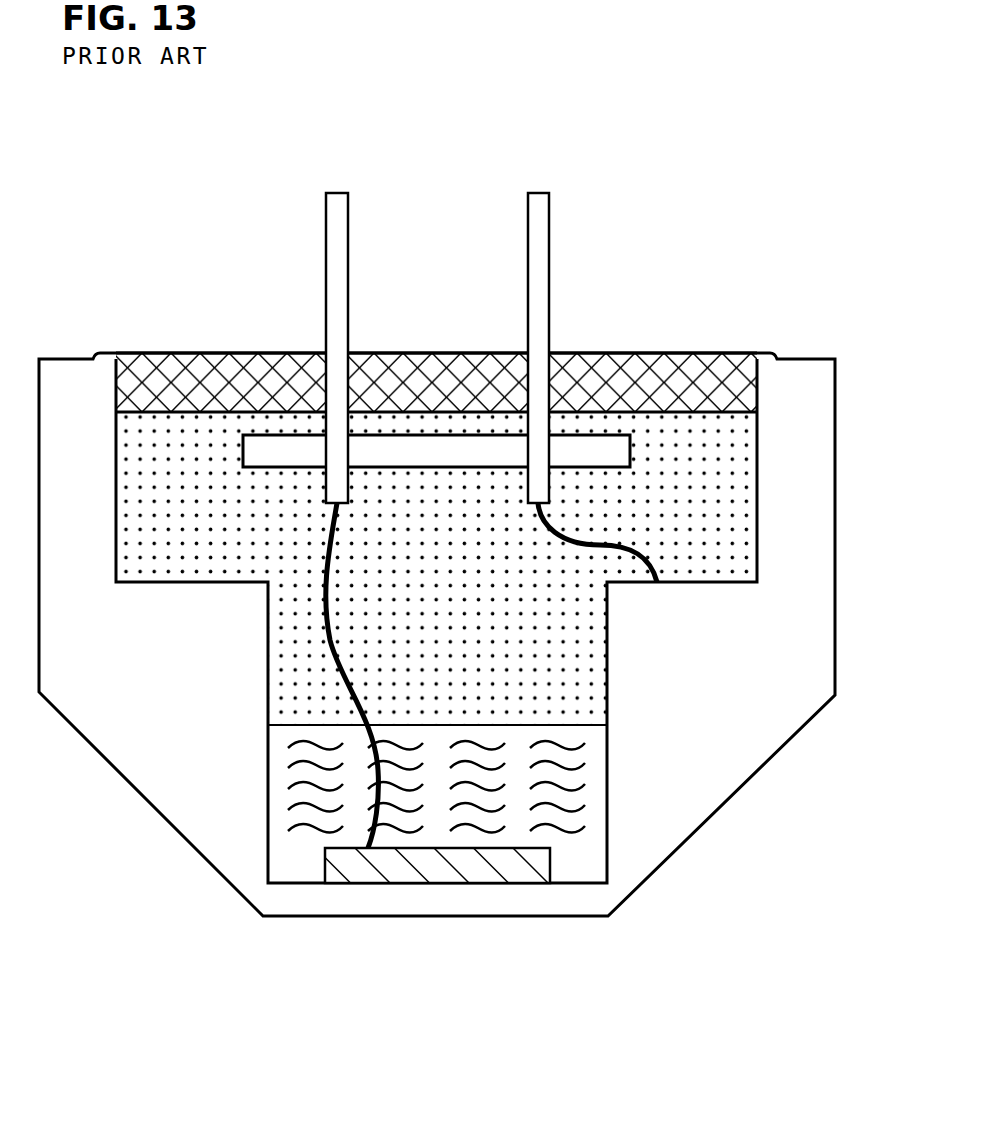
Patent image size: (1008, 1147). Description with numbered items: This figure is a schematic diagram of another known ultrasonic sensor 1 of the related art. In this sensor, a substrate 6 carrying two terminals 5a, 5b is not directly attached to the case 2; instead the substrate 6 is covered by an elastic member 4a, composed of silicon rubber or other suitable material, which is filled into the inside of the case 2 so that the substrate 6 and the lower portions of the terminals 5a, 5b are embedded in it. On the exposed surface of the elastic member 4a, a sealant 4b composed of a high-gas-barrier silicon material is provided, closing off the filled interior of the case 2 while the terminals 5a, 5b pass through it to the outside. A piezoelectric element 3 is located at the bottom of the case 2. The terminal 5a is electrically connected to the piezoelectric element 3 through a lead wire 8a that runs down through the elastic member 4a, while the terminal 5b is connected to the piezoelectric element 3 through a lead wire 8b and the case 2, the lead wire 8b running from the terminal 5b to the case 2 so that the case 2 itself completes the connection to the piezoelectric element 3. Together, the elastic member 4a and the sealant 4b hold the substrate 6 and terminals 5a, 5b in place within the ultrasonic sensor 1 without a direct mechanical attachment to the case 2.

The ultrasonic sensor 1 is at (70, 137).
The case 2 is at (713, 738).
The piezoelectric element 3 is at (438, 870).
The elastic member 4a is at (705, 477).
The sealant 4b is at (660, 380).
The terminal 5a is at (326, 208).
The terminal 5b is at (549, 213).
The substrate 6 is at (437, 452).
The lead wire 8a is at (333, 658).
The lead wire 8b is at (633, 547).